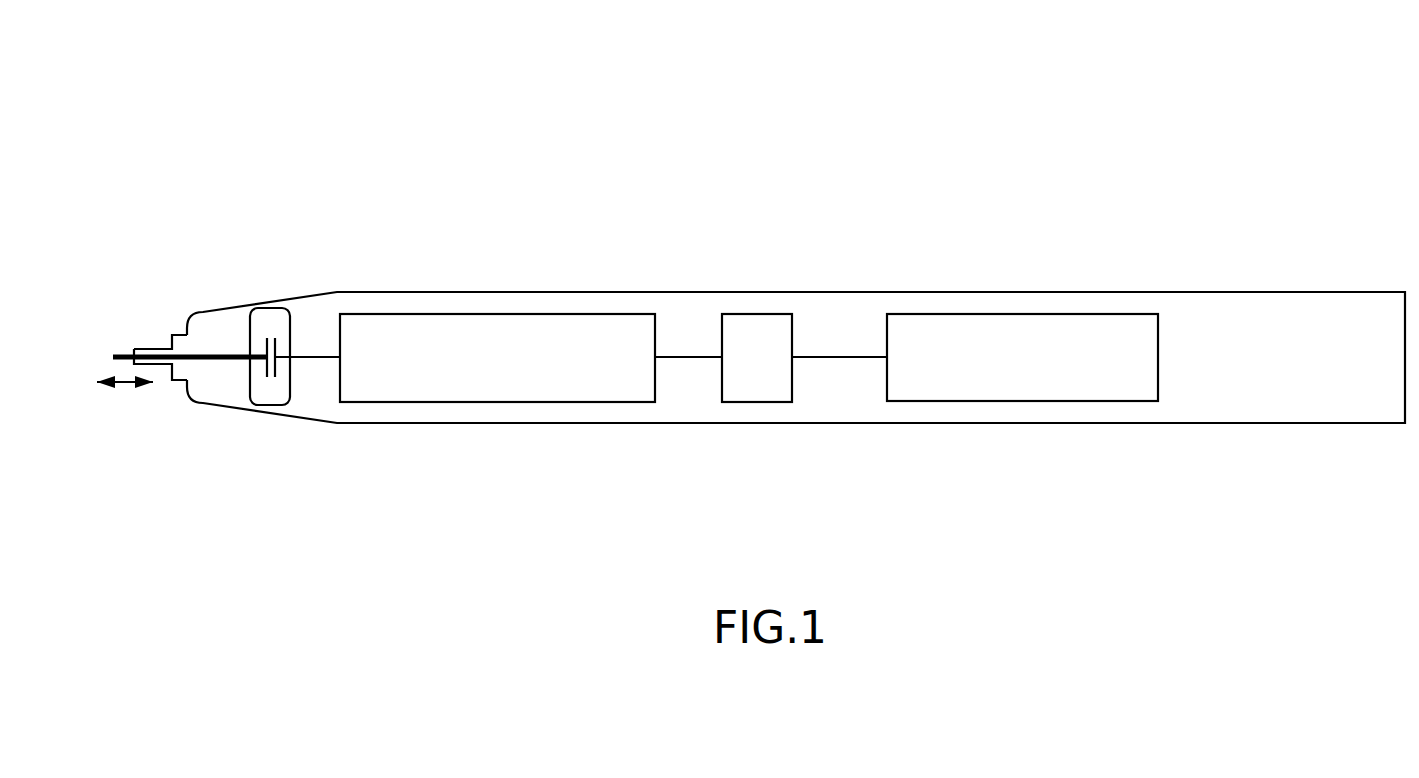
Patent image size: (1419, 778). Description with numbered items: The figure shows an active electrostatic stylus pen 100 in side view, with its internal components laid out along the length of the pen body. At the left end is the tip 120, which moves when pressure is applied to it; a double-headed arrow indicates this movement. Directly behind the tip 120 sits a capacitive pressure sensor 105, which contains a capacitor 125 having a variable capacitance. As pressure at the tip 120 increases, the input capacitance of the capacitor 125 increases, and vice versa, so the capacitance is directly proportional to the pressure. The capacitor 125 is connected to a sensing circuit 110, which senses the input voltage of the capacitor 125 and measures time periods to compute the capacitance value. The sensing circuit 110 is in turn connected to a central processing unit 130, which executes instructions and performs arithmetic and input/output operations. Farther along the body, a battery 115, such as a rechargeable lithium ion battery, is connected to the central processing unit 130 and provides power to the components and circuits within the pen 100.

The active electrostatic stylus pen 100 is at (900, 148).
The capacitive pressure sensor 105 is at (270, 405).
The sensing circuit 110 is at (507, 314).
The battery 115 is at (1052, 314).
The tip 120 is at (128, 335).
The capacitor 125 is at (267, 348).
The central processing unit 130 is at (765, 314).